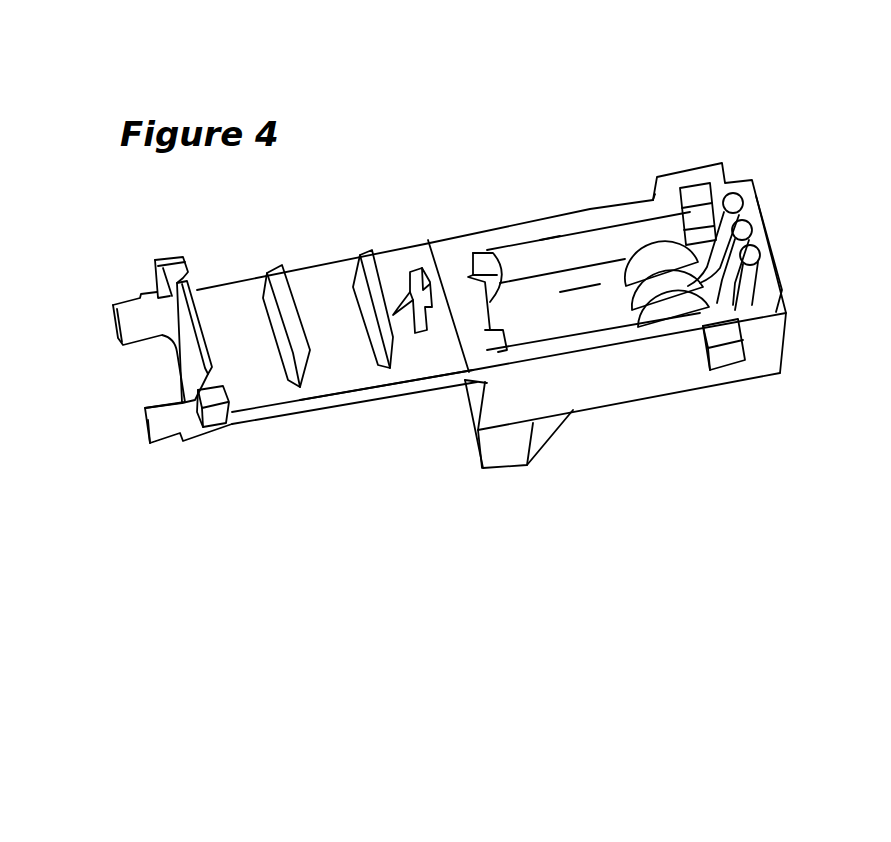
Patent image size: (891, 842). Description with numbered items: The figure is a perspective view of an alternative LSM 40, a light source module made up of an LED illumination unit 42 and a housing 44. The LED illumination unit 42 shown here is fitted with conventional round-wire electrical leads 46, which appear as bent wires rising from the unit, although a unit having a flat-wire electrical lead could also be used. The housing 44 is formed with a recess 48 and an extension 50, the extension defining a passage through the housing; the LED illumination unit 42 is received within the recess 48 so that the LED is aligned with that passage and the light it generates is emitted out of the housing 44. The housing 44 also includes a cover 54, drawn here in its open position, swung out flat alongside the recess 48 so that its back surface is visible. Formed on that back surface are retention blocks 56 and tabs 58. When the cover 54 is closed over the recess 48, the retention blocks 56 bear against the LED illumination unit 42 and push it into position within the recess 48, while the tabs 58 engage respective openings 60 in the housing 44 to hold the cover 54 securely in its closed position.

The alternative LSM 40 is at (492, 154).
The LED illumination unit 42 is at (580, 320).
The housing 44 is at (590, 207).
The round-wire electrical leads 46 is at (750, 196).
The recess 48 is at (553, 257).
The extension 50 is at (547, 447).
The cover 54 is at (437, 393).
The retention blocks 56 is at (212, 368).
The tabs 58 is at (173, 262).
The openings 60 is at (495, 255).